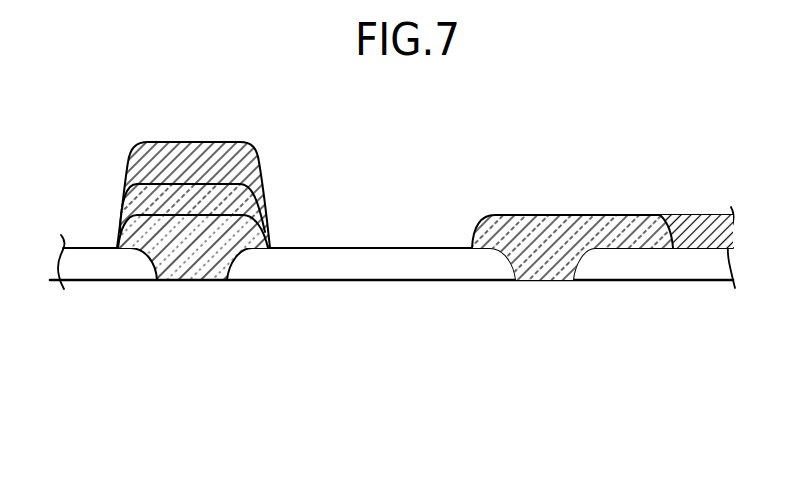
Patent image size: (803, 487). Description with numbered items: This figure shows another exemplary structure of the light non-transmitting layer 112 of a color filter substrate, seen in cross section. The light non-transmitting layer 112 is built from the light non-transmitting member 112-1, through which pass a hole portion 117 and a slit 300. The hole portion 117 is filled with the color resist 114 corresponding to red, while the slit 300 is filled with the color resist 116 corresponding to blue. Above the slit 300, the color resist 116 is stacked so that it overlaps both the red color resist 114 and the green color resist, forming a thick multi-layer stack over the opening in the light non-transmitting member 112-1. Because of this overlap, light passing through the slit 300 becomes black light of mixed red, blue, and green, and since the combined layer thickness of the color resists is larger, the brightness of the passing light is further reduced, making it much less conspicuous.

The light non-transmitting layer 112 is at (473, 355).
The light non-transmitting member 112-1 is at (97, 282).
The color resist corresponding to red 114 is at (238, 188).
The color resist corresponding to blue 116 is at (265, 224).
The hole portion 117 is at (548, 283).
The slit 300 is at (188, 282).